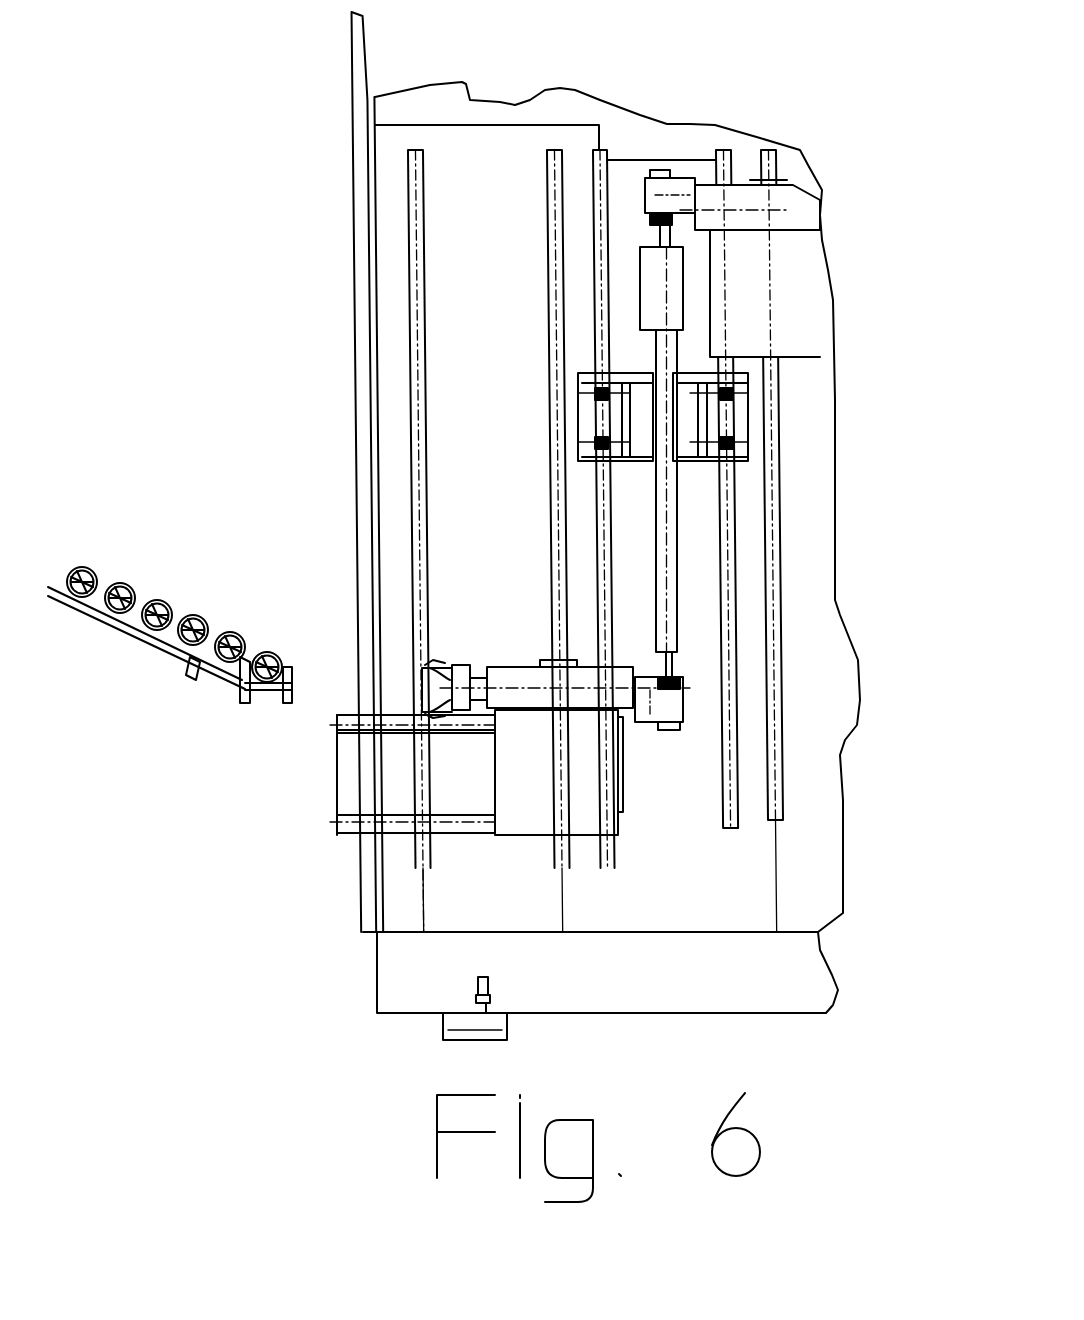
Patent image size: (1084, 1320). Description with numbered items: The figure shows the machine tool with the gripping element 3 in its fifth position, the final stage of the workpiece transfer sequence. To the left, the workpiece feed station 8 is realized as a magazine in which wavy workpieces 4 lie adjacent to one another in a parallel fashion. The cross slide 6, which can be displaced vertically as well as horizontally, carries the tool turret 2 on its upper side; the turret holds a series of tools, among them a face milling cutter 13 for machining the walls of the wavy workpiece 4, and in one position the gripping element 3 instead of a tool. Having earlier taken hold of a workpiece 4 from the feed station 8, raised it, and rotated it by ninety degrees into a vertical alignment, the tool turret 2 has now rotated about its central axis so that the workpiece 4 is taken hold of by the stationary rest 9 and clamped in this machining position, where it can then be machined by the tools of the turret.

The tool turret 2 is at (800, 210).
The gripping element 3 is at (462, 668).
The workpiece 4 is at (672, 547).
The slide 6 is at (810, 300).
The workpiece feed station 8 is at (218, 678).
The stationary rest 9 is at (745, 413).
The face milling cutter 13 is at (660, 230).